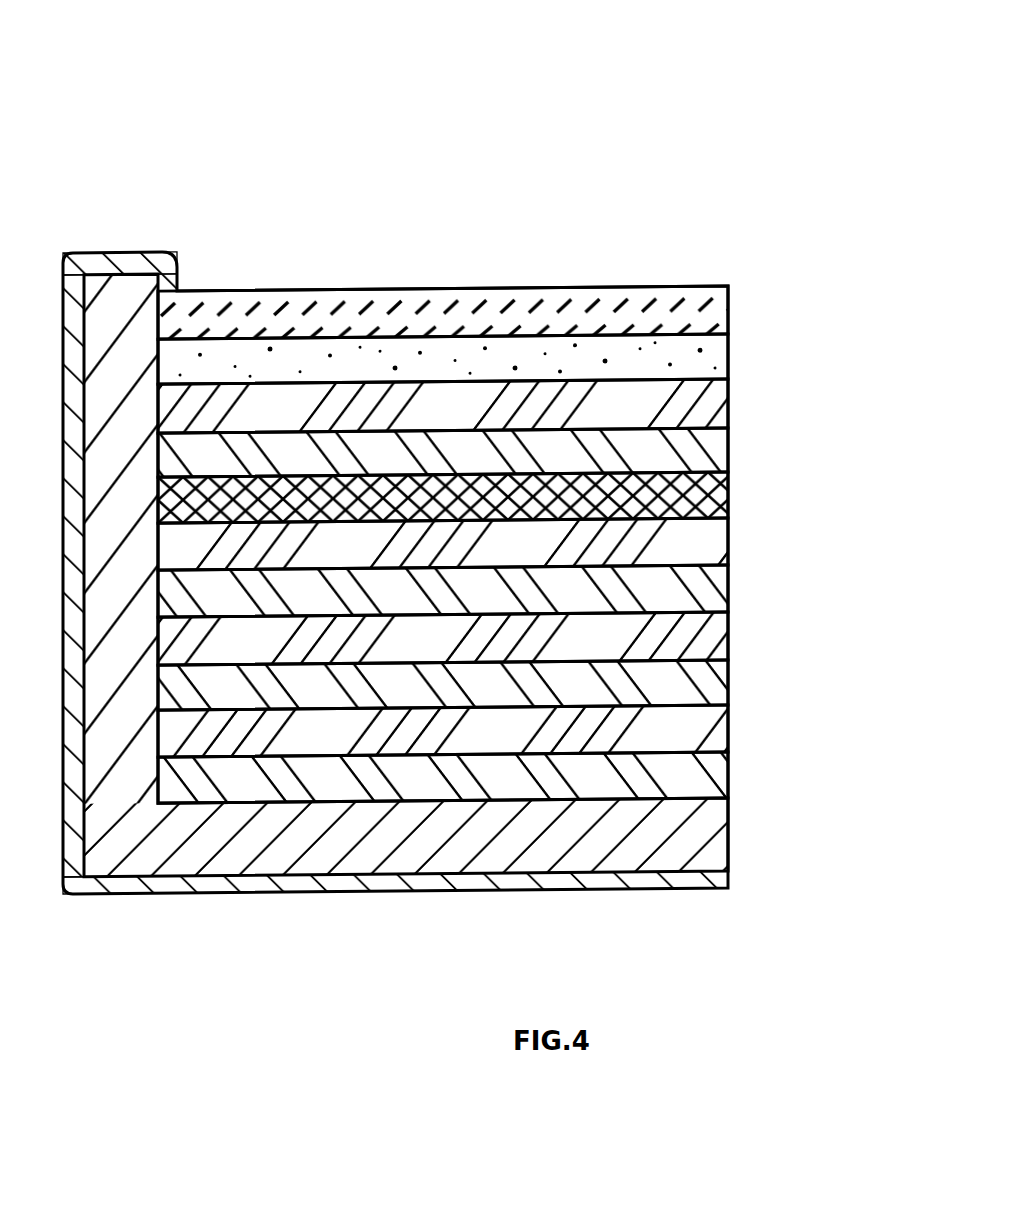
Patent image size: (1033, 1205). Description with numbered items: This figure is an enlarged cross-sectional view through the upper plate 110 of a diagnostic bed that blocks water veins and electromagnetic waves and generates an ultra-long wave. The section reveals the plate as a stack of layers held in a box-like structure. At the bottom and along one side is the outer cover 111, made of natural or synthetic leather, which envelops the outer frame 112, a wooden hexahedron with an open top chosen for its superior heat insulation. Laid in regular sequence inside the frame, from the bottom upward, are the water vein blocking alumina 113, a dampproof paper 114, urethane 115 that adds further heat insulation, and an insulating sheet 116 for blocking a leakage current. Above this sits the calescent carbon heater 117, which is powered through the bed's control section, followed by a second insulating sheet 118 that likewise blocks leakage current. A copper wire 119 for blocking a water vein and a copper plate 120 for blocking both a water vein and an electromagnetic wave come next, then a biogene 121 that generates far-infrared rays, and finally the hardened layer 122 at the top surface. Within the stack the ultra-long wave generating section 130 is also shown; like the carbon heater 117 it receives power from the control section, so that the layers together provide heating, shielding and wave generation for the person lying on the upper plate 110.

The upper plate 110 is at (658, 220).
The outer cover 111 is at (705, 887).
The outer frame 112 is at (700, 823).
The water vein blocking alumina 113 is at (700, 776).
The dampproof paper 114 is at (700, 729).
The urethane 115 is at (700, 684).
The insulating sheet 116 is at (700, 636).
The calescent carbon heater 117 is at (700, 589).
The insulating sheet 118 is at (700, 543).
The copper wire 119 is at (700, 448).
The copper plate 120 is at (700, 403).
The biogene 121 is at (700, 356).
The hardened layer 122 is at (715, 295).
The ultra-long wave generating section 130 is at (700, 496).